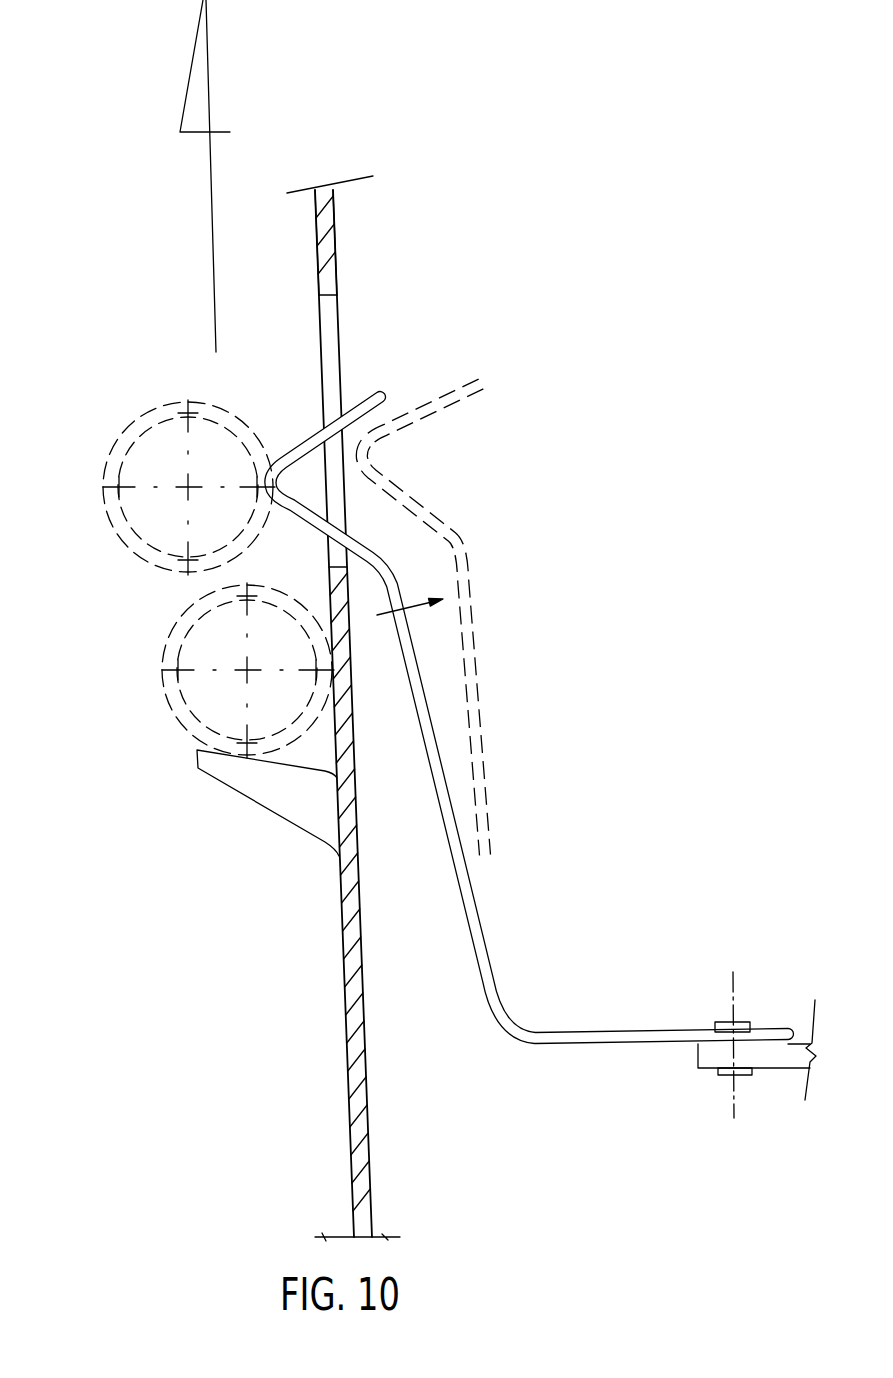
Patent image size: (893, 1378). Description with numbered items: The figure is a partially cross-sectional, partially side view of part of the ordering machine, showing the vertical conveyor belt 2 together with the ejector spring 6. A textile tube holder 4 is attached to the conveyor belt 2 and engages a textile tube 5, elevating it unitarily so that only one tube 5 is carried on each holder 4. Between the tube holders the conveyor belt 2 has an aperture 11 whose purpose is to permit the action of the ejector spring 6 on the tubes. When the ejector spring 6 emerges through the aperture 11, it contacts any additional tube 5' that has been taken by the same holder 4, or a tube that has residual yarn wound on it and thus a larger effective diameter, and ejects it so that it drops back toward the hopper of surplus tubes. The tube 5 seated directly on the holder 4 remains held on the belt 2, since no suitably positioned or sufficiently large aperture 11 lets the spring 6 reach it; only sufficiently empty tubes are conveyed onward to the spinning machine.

The conveyor belt 2 is at (345, 899).
The aperture 11 is at (336, 325).
The ejector spring 6 is at (303, 442).
The textile tube holder 4 is at (262, 790).
The upper roller 5' is at (155, 487).
The textile tube 5 is at (212, 670).